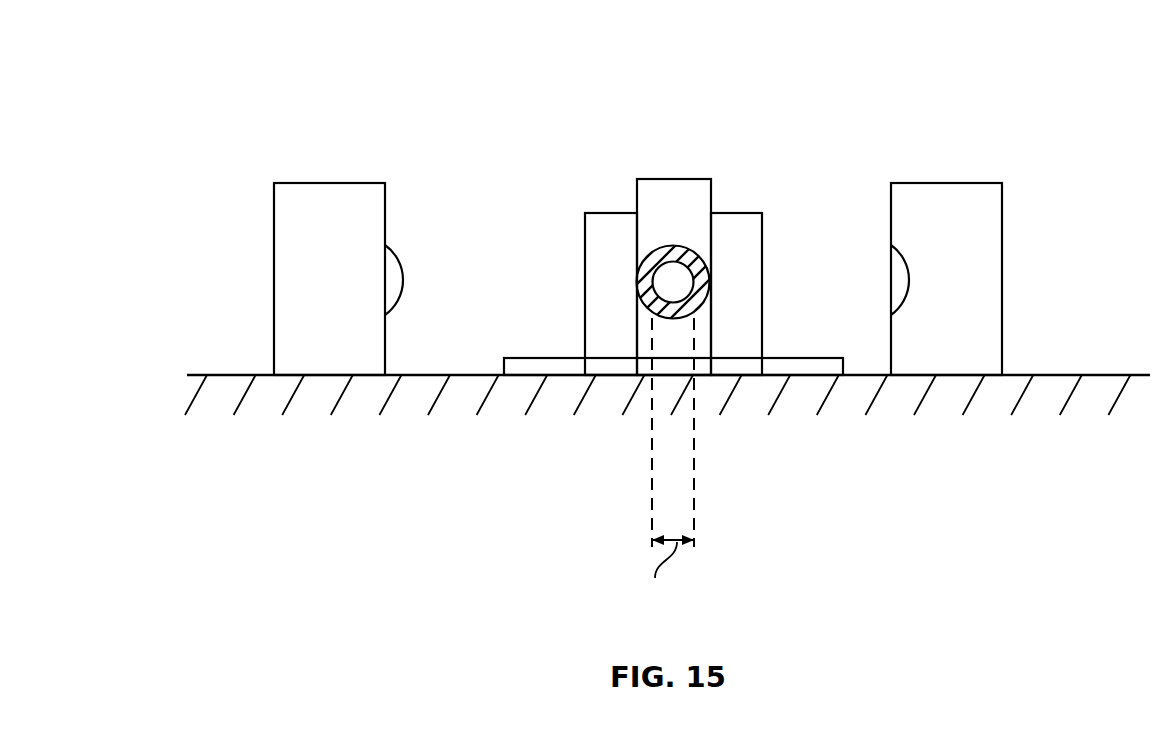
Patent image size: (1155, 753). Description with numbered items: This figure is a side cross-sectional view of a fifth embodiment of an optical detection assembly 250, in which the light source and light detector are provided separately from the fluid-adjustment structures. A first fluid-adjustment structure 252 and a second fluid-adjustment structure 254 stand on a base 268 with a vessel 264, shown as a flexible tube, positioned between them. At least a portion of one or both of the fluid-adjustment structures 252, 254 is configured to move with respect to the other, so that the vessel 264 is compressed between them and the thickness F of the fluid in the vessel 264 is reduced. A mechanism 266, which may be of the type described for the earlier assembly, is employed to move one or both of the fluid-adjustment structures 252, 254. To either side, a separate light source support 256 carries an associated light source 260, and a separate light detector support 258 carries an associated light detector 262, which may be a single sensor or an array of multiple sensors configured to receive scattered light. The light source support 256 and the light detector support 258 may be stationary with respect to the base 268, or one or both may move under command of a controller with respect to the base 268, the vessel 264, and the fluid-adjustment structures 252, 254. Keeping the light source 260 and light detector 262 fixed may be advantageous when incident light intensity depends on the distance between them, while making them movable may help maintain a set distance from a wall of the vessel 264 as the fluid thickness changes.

The optical detection assembly 250 is at (330, 108).
The first fluid-adjustment structure 252 is at (615, 313).
The second fluid-adjustment structure 254 is at (735, 318).
The light source support 256 is at (293, 263).
The light detector support 258 is at (975, 283).
The light source 260 is at (402, 260).
The light detector 262 is at (889, 278).
The vessel 264 is at (667, 244).
The mechanism 266 is at (818, 366).
The base 268 is at (1068, 343).